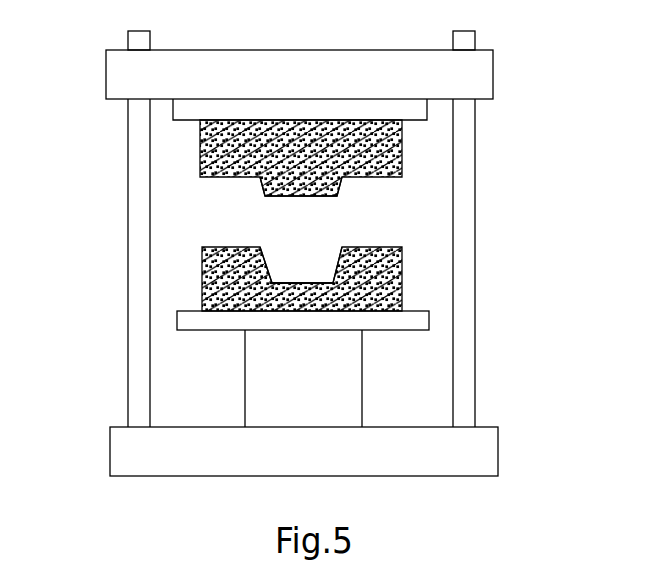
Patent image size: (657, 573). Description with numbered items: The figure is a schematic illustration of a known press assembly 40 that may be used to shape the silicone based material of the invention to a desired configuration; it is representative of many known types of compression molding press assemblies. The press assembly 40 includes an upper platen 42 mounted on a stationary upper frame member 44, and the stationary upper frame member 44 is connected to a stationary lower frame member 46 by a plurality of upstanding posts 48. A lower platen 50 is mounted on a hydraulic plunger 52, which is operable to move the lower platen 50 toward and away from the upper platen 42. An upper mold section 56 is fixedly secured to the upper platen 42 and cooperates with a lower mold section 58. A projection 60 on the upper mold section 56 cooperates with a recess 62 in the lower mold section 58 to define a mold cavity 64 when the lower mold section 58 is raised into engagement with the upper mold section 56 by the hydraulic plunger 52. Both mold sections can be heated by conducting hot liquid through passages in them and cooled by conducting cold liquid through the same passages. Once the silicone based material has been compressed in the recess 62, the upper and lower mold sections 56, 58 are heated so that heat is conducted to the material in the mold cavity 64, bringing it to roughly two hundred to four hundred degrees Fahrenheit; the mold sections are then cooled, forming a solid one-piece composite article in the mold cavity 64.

The press assembly 40 is at (556, 63).
The upper platen 42 is at (417, 113).
The stationary upper frame member 44 is at (120, 78).
The stationary lower frame member 46 is at (120, 450).
The upstanding posts 48 is at (142, 295).
The lower platen 50 is at (403, 320).
The hydraulic plunger 52 is at (293, 390).
The upper mold section 56 is at (402, 157).
The lower mold section 58 is at (403, 276).
The projection 60 is at (263, 190).
The recess 62 is at (292, 267).
The mold cavity 64 is at (292, 283).